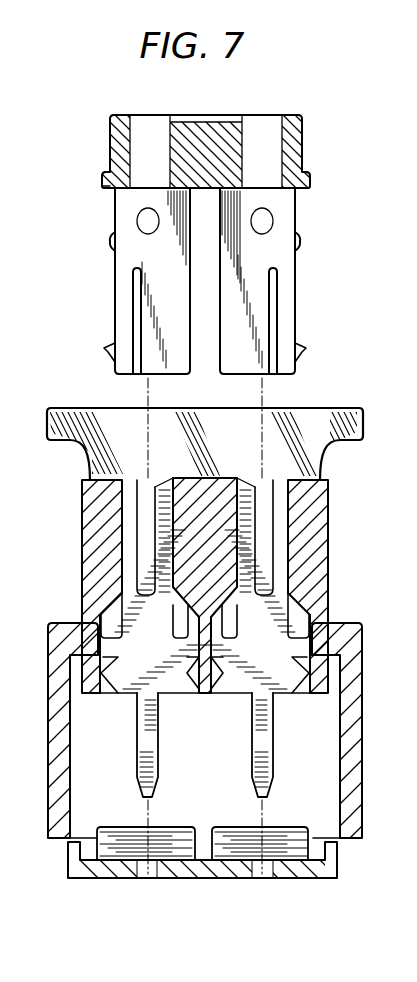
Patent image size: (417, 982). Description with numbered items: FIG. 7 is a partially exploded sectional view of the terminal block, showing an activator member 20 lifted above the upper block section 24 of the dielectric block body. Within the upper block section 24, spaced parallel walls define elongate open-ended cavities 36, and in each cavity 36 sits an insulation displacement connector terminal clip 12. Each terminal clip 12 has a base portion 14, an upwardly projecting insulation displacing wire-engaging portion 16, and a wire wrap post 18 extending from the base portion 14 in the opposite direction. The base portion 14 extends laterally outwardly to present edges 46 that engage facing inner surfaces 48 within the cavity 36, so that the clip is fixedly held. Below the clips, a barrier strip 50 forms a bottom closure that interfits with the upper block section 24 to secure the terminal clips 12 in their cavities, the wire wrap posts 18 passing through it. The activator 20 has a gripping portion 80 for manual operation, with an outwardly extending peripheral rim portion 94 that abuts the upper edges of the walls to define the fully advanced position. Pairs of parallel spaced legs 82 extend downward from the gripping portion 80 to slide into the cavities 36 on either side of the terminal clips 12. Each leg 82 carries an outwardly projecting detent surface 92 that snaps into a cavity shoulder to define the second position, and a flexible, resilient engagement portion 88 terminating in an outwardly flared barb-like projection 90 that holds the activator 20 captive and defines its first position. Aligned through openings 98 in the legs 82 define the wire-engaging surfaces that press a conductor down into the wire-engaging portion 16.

The activator member 20 is at (112, 131).
The gripping portion 80 is at (302, 134).
The peripheral rim portion 94 is at (105, 183).
The through opening 98 is at (138, 217).
The detent surface 92 is at (112, 243).
The leg 82 is at (128, 262).
The flexible resilient engagement portion 88 is at (120, 299).
The barb-like projection 90 is at (106, 355).
The terminal clip 12 is at (130, 548).
The insulation displacing wire-engaging portion 16 is at (128, 500).
The cavity 36 is at (130, 516).
The edge 46 is at (114, 617).
The inner surface 48 is at (76, 622).
The base portion 14 is at (55, 645).
The upper block section 24 is at (351, 727).
The wire wrap post 18 is at (258, 741).
The barrier strip 50 is at (337, 866).